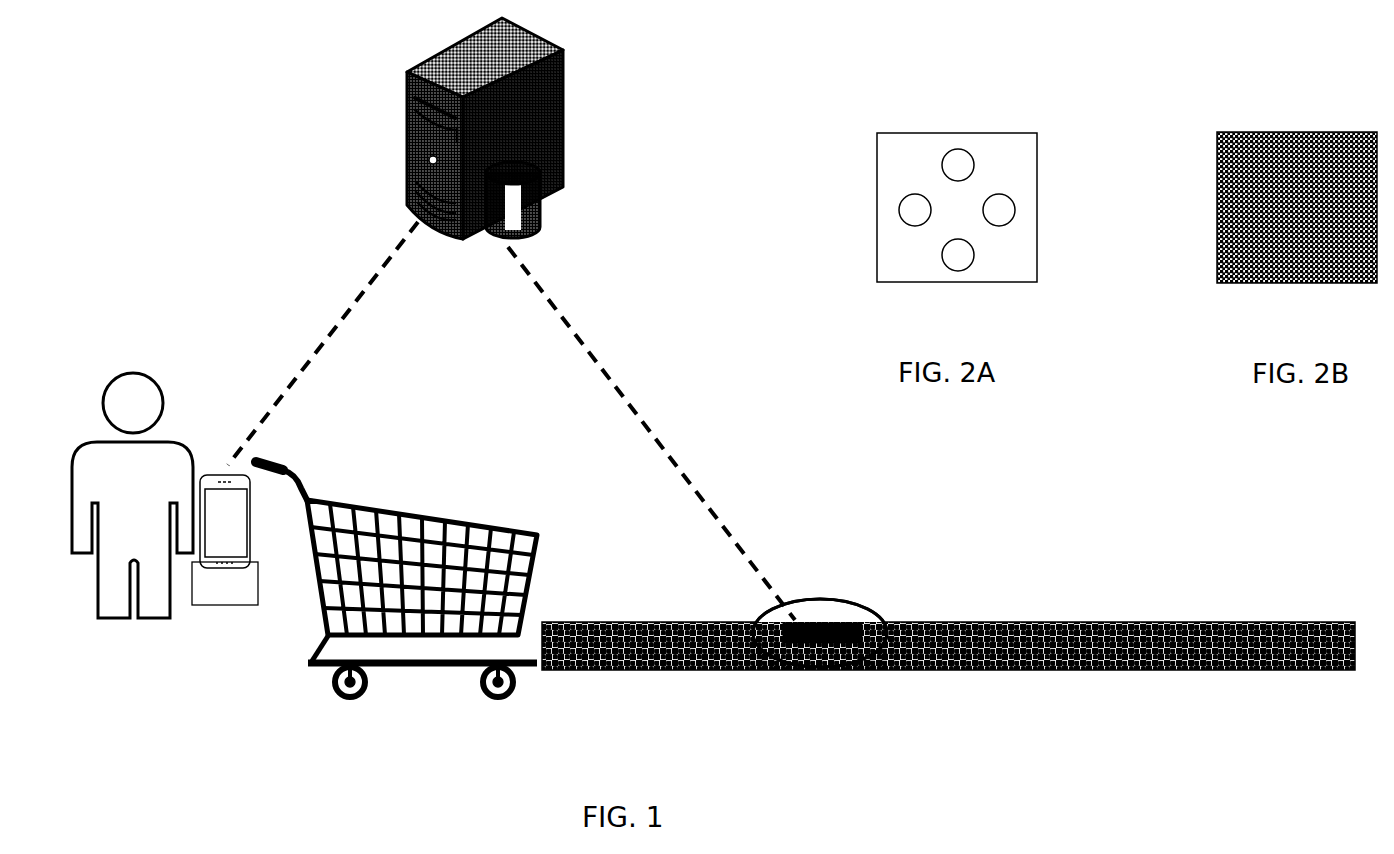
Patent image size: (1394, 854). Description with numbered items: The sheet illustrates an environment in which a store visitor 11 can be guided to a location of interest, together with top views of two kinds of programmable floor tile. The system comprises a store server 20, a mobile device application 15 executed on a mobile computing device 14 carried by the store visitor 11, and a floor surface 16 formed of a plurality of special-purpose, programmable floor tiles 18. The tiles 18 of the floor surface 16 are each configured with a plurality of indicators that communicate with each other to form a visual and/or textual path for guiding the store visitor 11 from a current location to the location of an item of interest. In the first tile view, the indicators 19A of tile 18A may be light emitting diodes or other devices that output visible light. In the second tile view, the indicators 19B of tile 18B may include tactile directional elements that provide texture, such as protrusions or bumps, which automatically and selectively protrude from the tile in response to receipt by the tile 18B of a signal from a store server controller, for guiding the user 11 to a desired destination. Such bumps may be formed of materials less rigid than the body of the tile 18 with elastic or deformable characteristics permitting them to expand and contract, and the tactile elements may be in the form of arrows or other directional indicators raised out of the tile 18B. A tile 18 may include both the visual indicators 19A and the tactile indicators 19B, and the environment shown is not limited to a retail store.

In FIG. 1, the store visitor 11 is at (67, 418).
In FIG. 1, the mobile computing device 14 is at (227, 465).
In FIG. 1, the mobile device application 15 is at (225, 583).
In FIG. 1, the floor surface 16 is at (698, 622).
In FIG. 1, the programmable floor tile 18 is at (852, 602).
In FIG. 1, the store server 20 is at (400, 180).
In FIG. 2A, the tile 18A is at (877, 220).
In FIG. 2A, the indicators 19A is at (958, 165).
In FIG. 2B, the tile 18B is at (1217, 225).
In FIG. 2B, the indicators 19B is at (1280, 140).